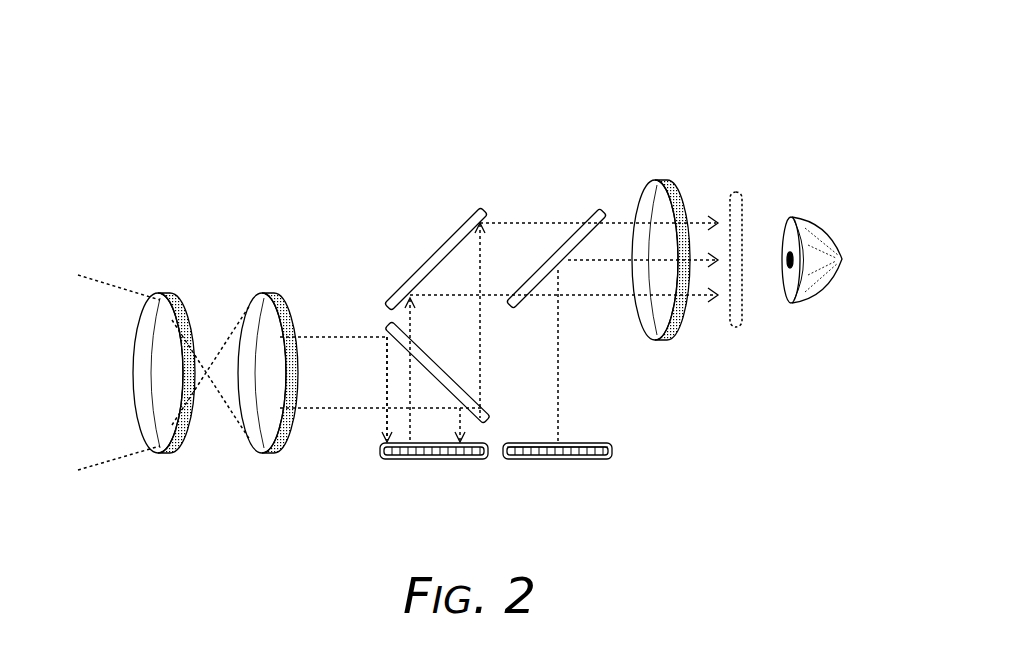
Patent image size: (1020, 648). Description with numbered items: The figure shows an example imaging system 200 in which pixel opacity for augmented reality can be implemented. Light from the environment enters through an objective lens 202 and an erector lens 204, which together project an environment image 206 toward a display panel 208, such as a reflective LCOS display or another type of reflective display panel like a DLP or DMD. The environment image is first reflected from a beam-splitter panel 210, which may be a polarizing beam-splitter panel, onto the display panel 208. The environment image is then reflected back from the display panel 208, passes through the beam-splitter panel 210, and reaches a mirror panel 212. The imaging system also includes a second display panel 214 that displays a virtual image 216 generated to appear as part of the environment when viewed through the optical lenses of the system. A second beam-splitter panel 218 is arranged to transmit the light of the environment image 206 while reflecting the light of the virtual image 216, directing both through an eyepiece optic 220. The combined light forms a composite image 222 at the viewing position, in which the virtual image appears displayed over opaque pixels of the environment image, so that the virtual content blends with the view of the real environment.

The imaging system 200 is at (740, 68).
The objective lens 202 is at (163, 295).
The erector lens 204 is at (268, 295).
The environment image 206 is at (383, 437).
The display panel 208 is at (432, 460).
The beam-splitter panel 210 is at (390, 322).
The mirror panel 212 is at (443, 242).
The display panel 214 is at (553, 460).
The virtual image 216 is at (568, 443).
The second beam-splitter panel 218 is at (595, 208).
The eyepiece optic 220 is at (662, 180).
The composite image 222 is at (742, 210).